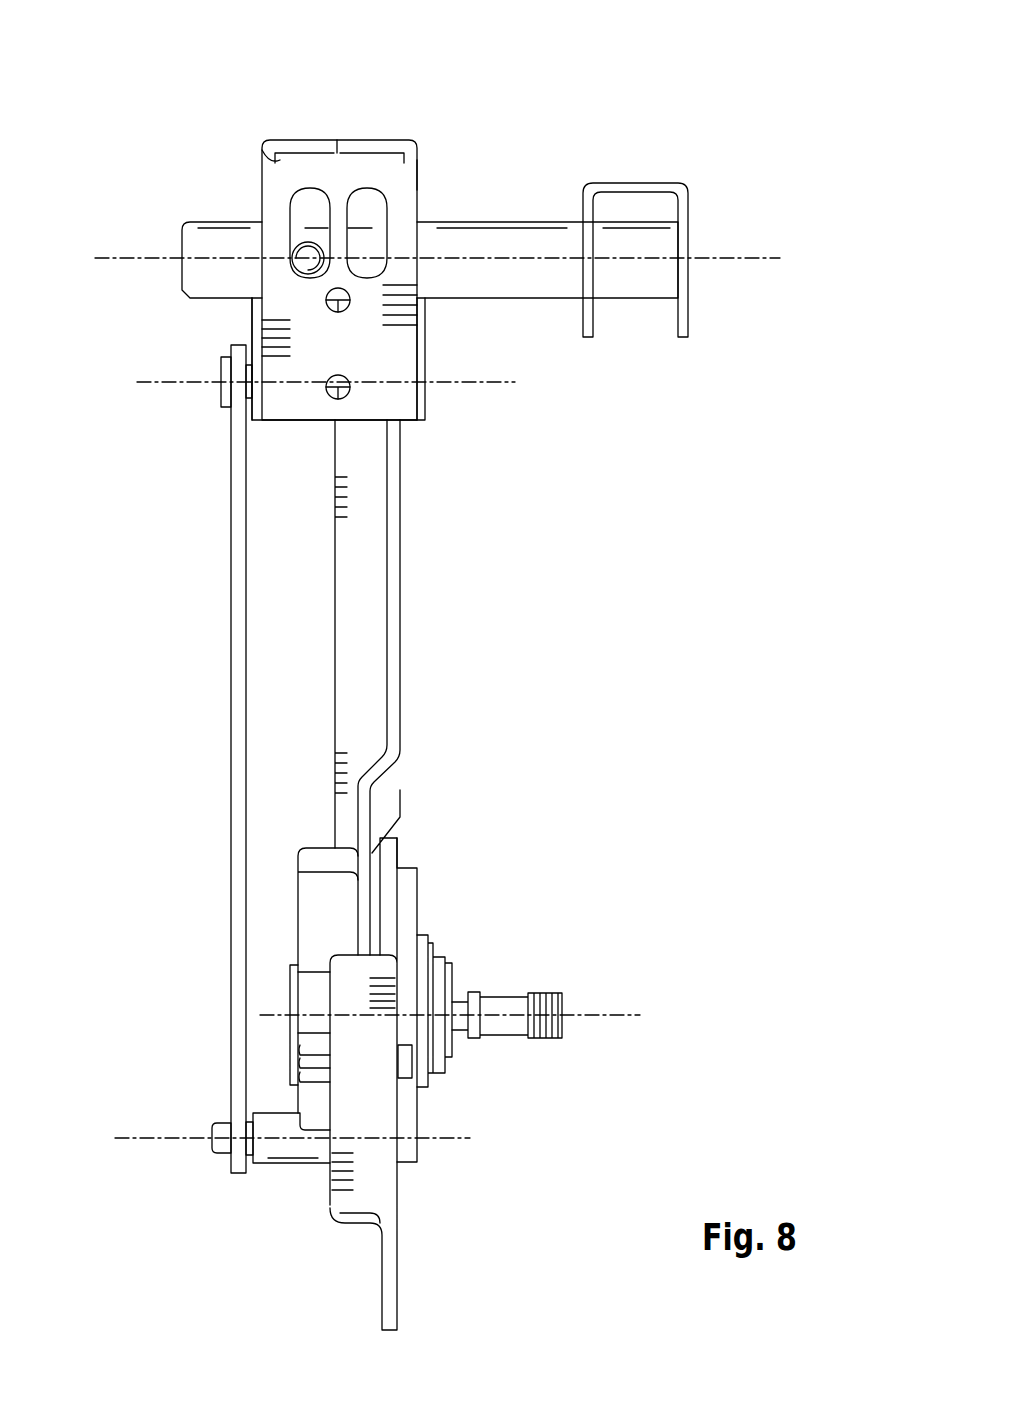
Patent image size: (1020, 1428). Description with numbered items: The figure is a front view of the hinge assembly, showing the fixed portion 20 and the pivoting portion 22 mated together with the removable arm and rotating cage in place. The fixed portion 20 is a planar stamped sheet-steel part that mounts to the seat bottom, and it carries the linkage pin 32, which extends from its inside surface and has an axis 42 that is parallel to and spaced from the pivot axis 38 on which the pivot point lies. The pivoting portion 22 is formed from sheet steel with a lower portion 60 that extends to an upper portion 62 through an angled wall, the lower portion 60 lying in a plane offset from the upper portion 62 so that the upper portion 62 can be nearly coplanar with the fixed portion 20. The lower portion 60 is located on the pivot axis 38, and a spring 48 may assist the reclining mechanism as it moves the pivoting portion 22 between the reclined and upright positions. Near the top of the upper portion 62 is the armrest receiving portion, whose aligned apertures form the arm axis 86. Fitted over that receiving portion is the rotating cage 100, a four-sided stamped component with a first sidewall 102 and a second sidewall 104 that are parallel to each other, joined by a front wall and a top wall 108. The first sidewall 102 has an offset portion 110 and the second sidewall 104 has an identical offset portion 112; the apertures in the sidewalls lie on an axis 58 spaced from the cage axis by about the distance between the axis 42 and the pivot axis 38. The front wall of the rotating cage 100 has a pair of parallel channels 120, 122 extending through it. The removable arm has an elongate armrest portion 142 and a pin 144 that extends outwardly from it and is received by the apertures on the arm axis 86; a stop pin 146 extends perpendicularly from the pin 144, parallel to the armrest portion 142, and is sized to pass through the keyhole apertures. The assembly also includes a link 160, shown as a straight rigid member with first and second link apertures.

The fixed portion 20 is at (410, 1285).
The pivoting portion 22 is at (433, 687).
The linkage pin 32 is at (290, 1165).
The pivot axis 38 is at (615, 1015).
The axis of linkage pin 42 is at (145, 1138).
The spring 48 is at (316, 921).
The axis 58 is at (160, 382).
The lower portion 60 is at (367, 818).
The upper portion 62 is at (400, 680).
The arm axis 86 is at (115, 258).
The rotating cage 100 is at (326, 232).
The first sidewall 102 is at (262, 175).
The second sidewall 104 is at (417, 182).
The top wall 108 is at (352, 140).
The offset portion 110 is at (427, 397).
The offset portion 112 is at (262, 330).
The parallel channel 120 is at (297, 206).
The parallel channel 122 is at (372, 206).
The armrest portion 142 is at (634, 183).
The pin 144 is at (553, 222).
The stop pin 146 is at (292, 262).
The link 160 is at (231, 757).